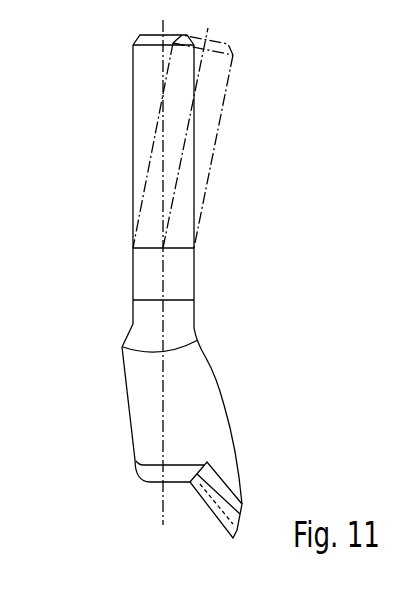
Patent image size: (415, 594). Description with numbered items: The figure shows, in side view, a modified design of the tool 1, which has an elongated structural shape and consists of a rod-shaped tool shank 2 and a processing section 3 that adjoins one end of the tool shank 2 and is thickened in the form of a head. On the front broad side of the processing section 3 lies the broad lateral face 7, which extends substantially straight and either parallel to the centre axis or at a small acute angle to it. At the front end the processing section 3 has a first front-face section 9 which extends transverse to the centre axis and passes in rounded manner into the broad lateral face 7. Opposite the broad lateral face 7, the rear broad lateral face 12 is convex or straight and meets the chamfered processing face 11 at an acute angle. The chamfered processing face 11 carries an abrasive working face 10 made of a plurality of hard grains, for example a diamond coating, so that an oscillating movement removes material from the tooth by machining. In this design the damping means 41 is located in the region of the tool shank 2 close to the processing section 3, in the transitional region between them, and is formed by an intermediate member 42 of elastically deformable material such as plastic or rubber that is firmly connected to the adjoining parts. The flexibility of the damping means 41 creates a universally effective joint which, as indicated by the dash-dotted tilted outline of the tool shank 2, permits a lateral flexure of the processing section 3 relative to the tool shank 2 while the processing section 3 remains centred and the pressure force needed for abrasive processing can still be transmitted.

The tool 1 is at (92, 326).
The tool shank 2 is at (133, 73).
The processing section 3 is at (207, 395).
The broad lateral face 7 is at (127, 410).
The first front-face section 9 is at (173, 477).
The abrasive working face 10 is at (219, 506).
The chamfered processing face 11 is at (218, 499).
The rear broad lateral face 12 is at (237, 417).
The damping means 41 is at (207, 308).
The intermediate member 42 is at (183, 333).